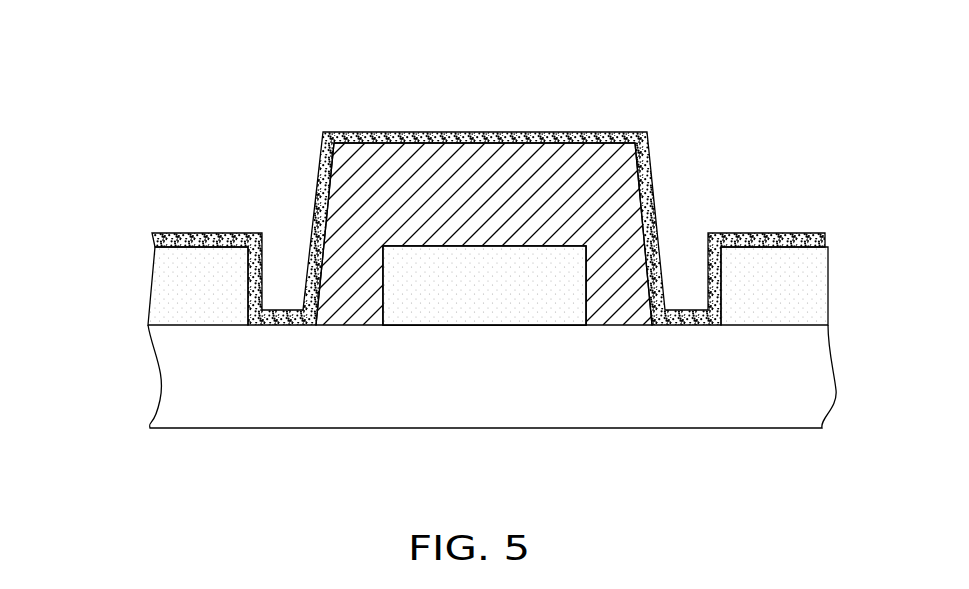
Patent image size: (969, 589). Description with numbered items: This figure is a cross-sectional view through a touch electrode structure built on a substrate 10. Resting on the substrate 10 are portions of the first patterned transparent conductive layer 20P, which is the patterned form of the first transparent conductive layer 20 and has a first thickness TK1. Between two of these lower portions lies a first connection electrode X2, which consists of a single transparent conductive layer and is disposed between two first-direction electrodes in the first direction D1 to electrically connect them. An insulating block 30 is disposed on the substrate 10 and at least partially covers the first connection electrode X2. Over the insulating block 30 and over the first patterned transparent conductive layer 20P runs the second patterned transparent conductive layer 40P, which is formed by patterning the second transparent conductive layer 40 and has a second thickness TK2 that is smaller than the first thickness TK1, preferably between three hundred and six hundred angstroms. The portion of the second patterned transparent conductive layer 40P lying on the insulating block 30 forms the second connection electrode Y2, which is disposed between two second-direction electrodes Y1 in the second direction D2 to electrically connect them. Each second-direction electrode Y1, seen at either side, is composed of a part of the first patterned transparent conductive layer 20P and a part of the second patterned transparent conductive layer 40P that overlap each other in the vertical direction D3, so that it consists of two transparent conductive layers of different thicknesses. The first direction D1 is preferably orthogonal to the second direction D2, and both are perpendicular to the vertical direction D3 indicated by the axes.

The substrate 10 is at (497, 396).
The first patterned transparent conductive layer 20P is at (488, 316).
The first transparent conductive layer 20 is at (208, 283).
The insulating block 30 is at (414, 178).
The second patterned transparent conductive layer 40P is at (481, 218).
The second transparent conductive layer 40 is at (178, 240).
The second-direction electrode Y1 is at (120, 118).
The second connection electrode Y2 is at (478, 130).
The first connection electrode X2 is at (556, 246).
The first thickness TK1 is at (135, 247).
The second thickness TK2 is at (145, 247).
The first direction D1 is at (77, 522).
The second direction D2 is at (92, 528).
The vertical direction D3 is at (83, 519).